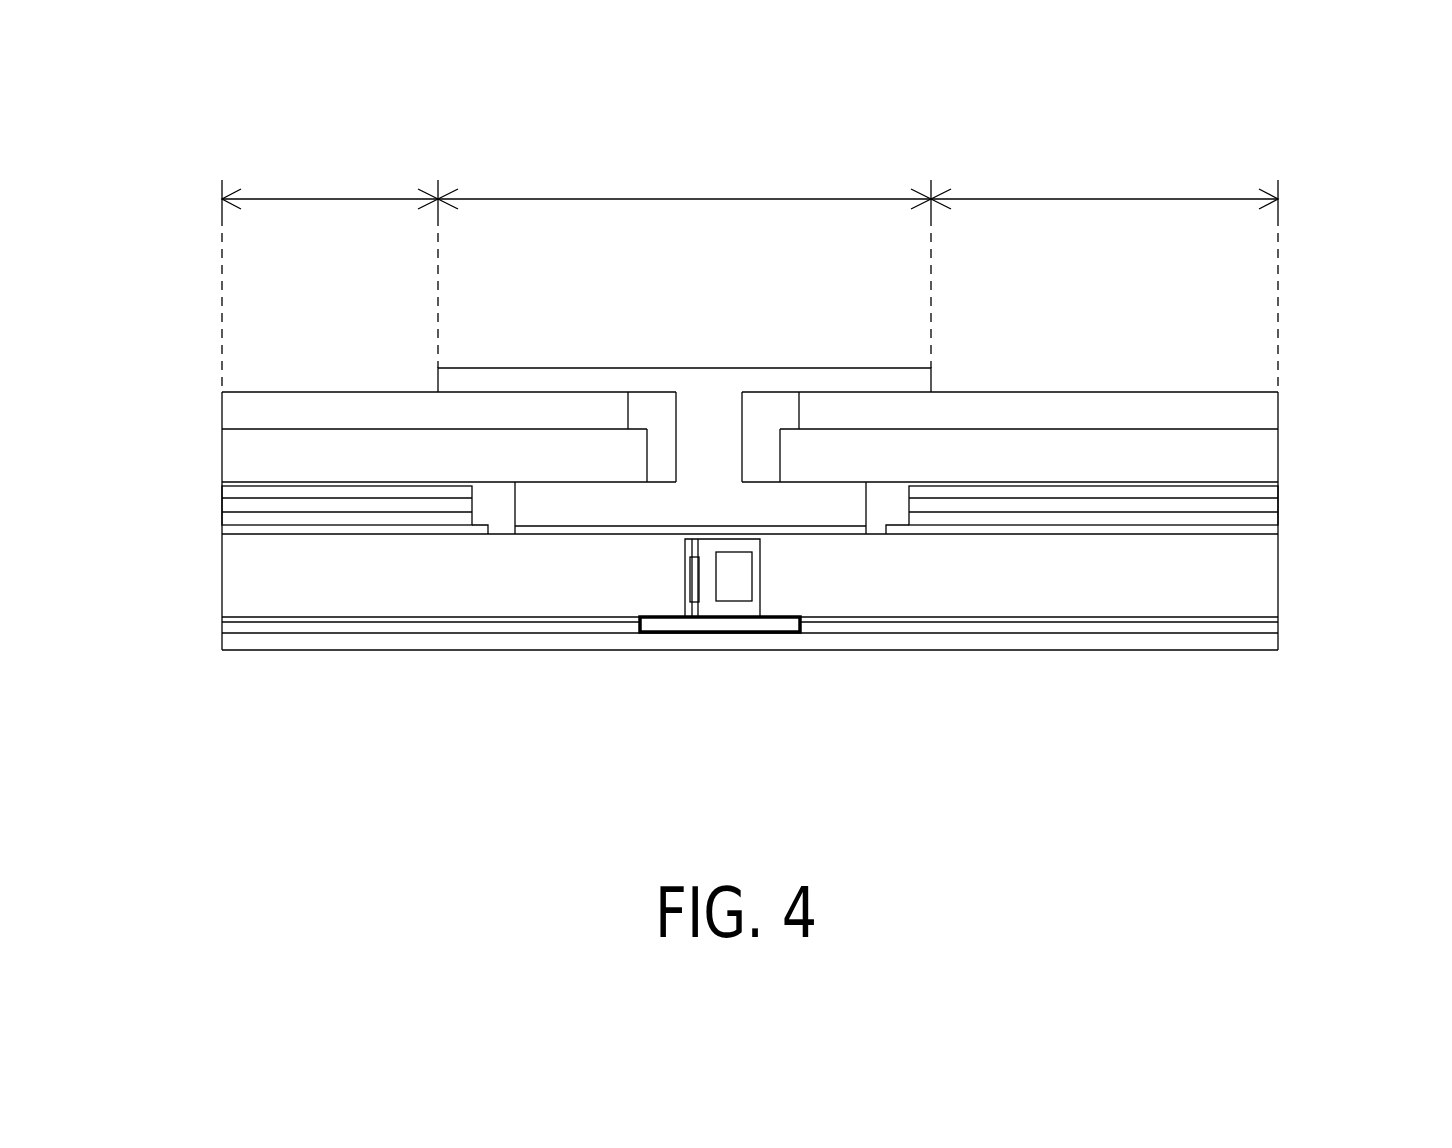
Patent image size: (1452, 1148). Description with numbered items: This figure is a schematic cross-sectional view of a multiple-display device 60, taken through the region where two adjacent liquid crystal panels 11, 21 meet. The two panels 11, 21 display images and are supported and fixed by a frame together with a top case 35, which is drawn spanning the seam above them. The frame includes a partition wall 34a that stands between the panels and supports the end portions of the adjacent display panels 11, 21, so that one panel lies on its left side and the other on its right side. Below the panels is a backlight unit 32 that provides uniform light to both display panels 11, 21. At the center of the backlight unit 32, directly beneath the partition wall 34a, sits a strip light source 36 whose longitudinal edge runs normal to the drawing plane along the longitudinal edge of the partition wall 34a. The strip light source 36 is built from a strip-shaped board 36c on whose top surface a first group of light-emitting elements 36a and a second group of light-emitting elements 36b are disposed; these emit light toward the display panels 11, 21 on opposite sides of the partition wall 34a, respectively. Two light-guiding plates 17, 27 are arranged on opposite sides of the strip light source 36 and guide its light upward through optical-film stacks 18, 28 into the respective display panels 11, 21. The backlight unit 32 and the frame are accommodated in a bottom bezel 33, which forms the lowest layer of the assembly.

The multiple-display device 60 is at (1407, 119).
The liquid crystal panel 11 is at (328, 392).
The liquid crystal panel 21 is at (1099, 392).
The top case 35 is at (538, 382).
The partition wall 34a is at (706, 410).
The optical-film stack 18 is at (218, 485).
The optical-film stack 28 is at (1280, 485).
The light-guiding plate 17 is at (455, 592).
The light-guiding plate 27 is at (1008, 592).
The strip light source 36 is at (736, 657).
The first group of light-emitting elements 36a is at (695, 590).
The second group of light-emitting elements 36b is at (734, 593).
The strip-shaped board 36c is at (742, 666).
The backlight unit 32 is at (750, 689).
The bottom bezel 33 is at (1228, 642).